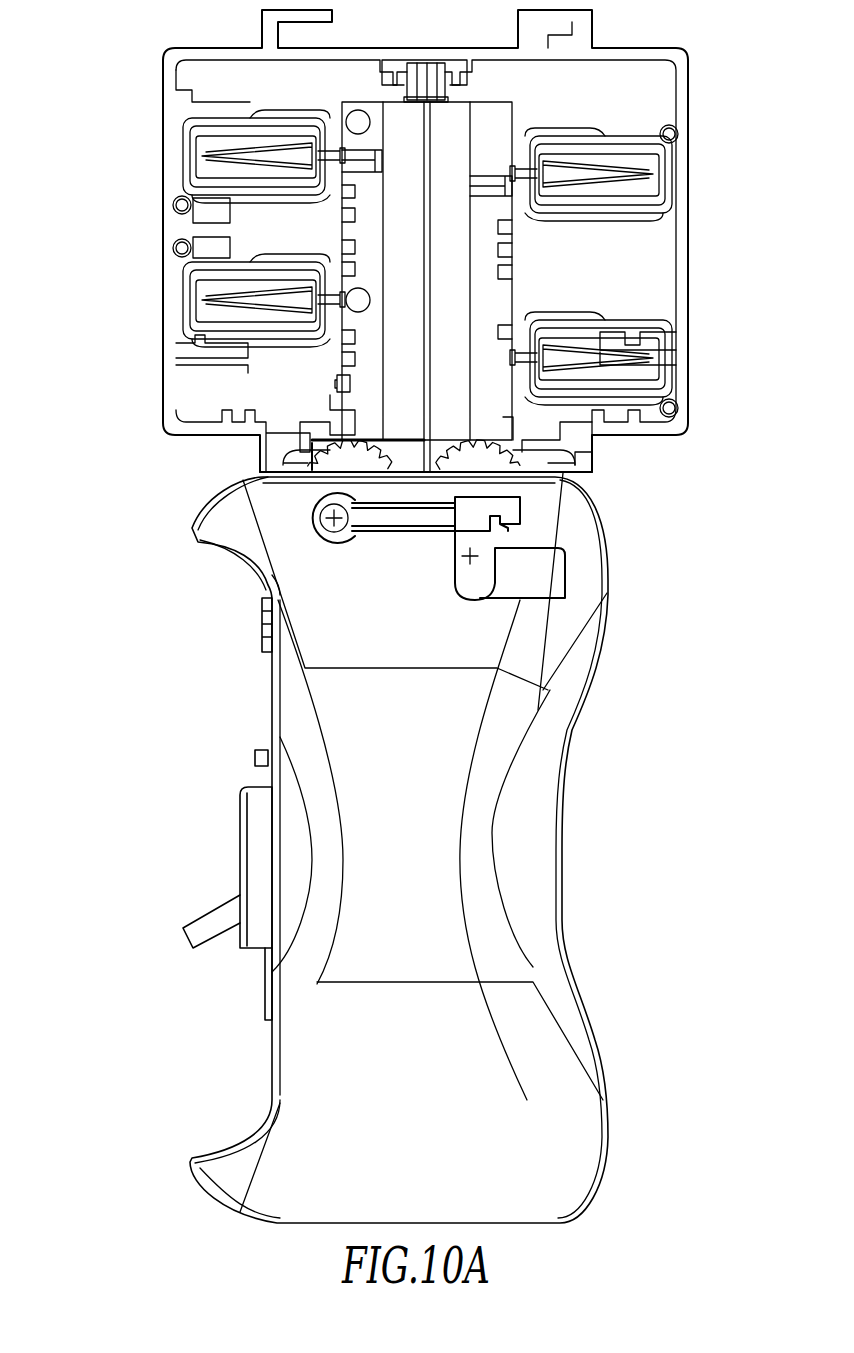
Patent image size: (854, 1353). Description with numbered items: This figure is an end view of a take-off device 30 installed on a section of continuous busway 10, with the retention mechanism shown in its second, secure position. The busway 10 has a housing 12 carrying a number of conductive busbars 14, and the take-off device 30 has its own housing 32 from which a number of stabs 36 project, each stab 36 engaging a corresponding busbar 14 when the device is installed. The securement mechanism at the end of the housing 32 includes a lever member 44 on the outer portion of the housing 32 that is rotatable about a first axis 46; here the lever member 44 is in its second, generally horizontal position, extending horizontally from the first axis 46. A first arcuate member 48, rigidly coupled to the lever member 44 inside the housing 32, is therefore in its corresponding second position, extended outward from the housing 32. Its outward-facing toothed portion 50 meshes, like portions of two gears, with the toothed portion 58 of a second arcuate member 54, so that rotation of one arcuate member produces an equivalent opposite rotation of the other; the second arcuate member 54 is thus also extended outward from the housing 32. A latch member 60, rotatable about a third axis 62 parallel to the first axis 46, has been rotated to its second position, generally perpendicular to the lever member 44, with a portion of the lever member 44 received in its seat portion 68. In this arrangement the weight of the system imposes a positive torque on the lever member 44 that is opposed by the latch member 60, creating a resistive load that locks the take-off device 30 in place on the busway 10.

The busway 10 is at (394, 241).
The housing 12 is at (683, 232).
The conductive busbars 14 is at (266, 172).
The take-off device 30 is at (457, 848).
The housing 32 is at (587, 1122).
The stabs 36 is at (302, 158).
The lever member 44 is at (420, 529).
The first axis 46 is at (312, 536).
The first arcuate member 48 is at (334, 458).
The toothed portion 50 is at (397, 432).
The second arcuate member 54 is at (503, 458).
The toothed portion 58 is at (457, 442).
The latch member 60 is at (468, 556).
The third axis 62 is at (455, 597).
The seat portion 68 is at (492, 510).